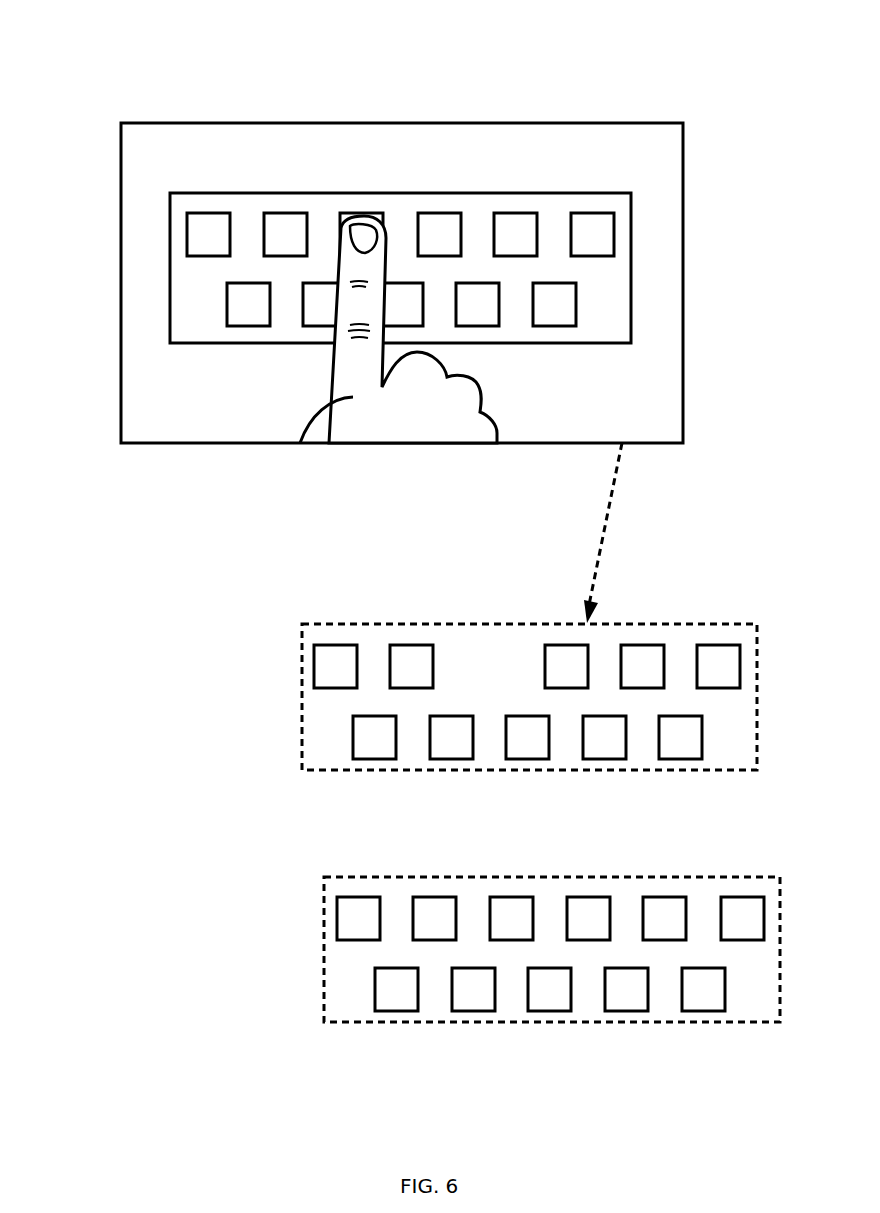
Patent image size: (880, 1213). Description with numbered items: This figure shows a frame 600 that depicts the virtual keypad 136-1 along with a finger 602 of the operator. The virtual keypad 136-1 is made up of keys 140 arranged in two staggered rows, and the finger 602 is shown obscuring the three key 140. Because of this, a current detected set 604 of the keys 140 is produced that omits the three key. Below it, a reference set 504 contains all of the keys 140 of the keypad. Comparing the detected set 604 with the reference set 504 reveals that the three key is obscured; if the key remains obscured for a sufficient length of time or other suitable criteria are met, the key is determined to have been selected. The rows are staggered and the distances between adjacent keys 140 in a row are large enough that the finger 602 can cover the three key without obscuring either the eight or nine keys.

The frame 600 is at (270, 103).
The virtual keypad 136-1 is at (334, 211).
The key 140 is at (170, 235).
The finger 602 is at (355, 397).
The current detected set 604 is at (285, 690).
The reference set 504 is at (305, 944).